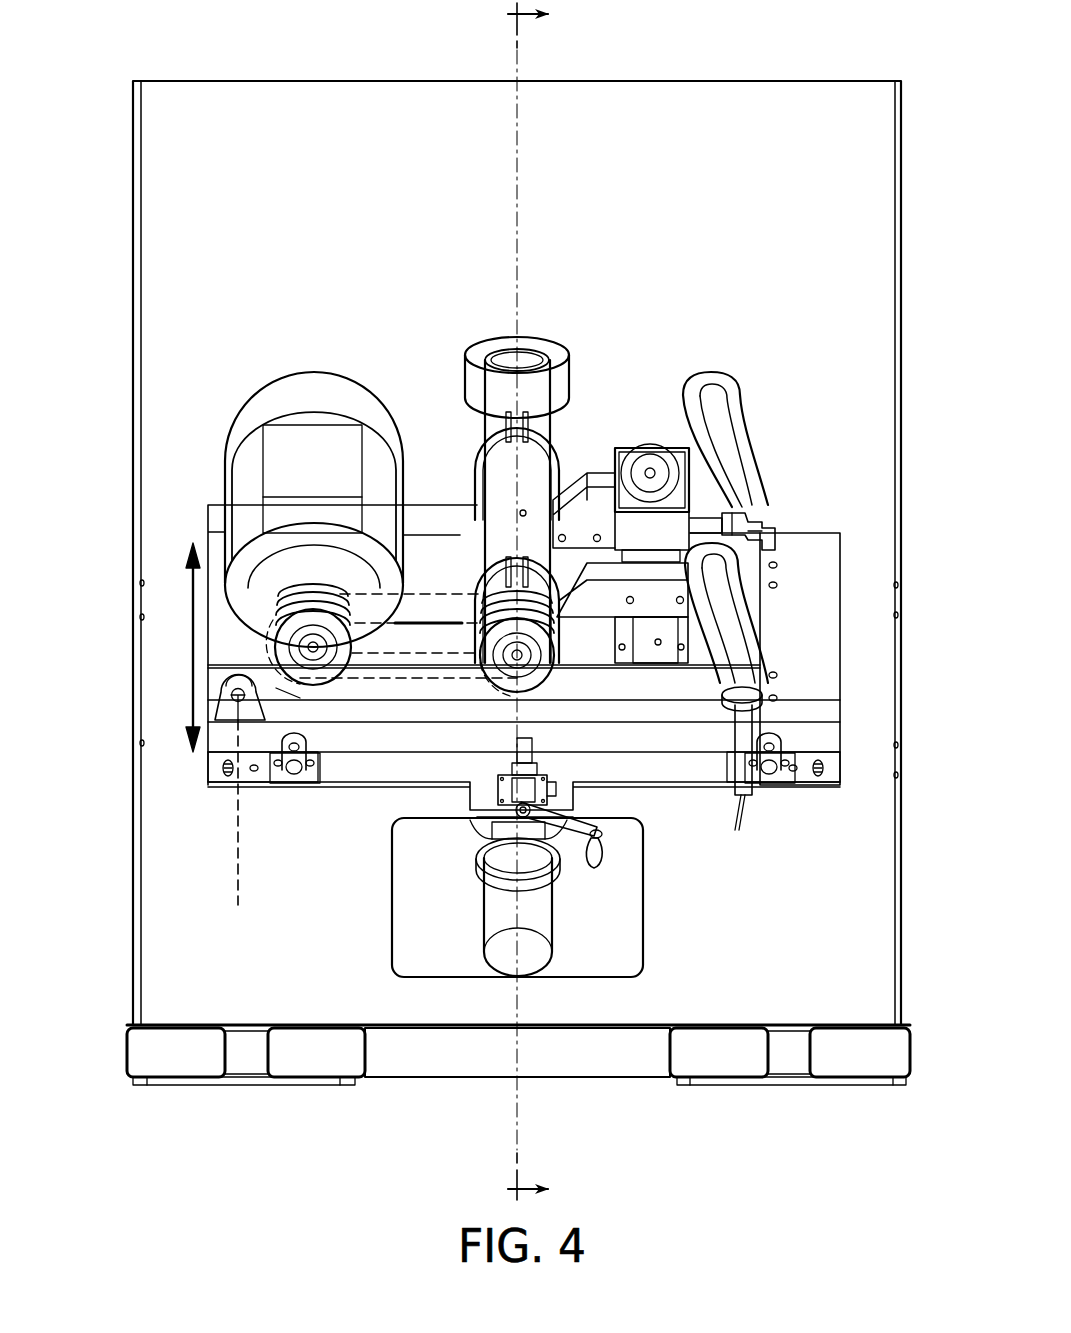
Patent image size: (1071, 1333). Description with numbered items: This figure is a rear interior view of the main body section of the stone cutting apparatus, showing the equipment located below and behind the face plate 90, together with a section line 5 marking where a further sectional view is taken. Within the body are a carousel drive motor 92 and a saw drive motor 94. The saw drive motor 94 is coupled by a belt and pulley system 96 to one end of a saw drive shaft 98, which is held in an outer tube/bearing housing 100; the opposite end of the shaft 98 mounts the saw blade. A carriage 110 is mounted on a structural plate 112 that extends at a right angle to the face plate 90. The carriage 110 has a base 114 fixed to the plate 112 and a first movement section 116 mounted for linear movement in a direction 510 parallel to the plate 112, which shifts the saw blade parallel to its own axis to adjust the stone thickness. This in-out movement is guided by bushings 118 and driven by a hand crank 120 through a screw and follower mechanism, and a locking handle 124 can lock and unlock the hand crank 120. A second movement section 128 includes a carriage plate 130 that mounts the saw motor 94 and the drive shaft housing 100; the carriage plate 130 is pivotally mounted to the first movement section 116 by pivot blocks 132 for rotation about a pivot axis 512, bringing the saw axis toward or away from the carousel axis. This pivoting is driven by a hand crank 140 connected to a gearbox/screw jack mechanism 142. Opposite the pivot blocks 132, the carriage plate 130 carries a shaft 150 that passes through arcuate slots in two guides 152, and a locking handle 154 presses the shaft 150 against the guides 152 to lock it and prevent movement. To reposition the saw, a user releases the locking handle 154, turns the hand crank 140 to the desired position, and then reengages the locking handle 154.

The section line 5- 5 is at (547, 605).
The face plate 90 is at (848, 290).
The carousel drive motor 92 is at (552, 921).
The saw drive motor 94 is at (316, 450).
The belt and pulley system 96 is at (404, 694).
The saw drive shaft 98 is at (548, 680).
The outer tube/bearing housing 100 is at (532, 474).
The carriage 110 is at (826, 608).
The structural plate 112 is at (862, 740).
The base 114 is at (840, 768).
The first movement section 116 is at (348, 752).
The bushings 118 is at (294, 792).
The hand crank 120 is at (612, 845).
The locking handle 124 is at (552, 761).
The second movement section 128 is at (452, 508).
The carriage plate 130 is at (288, 690).
The pivot blocks 132 is at (228, 708).
The hand crank 140 is at (772, 514).
The gearbox/screw jack mechanism 142 is at (702, 453).
The shaft 150 is at (758, 672).
The guides 152 is at (745, 450).
The locking handle 154 is at (748, 740).
The direction 510 is at (193, 645).
The pivot axis 512 is at (236, 852).